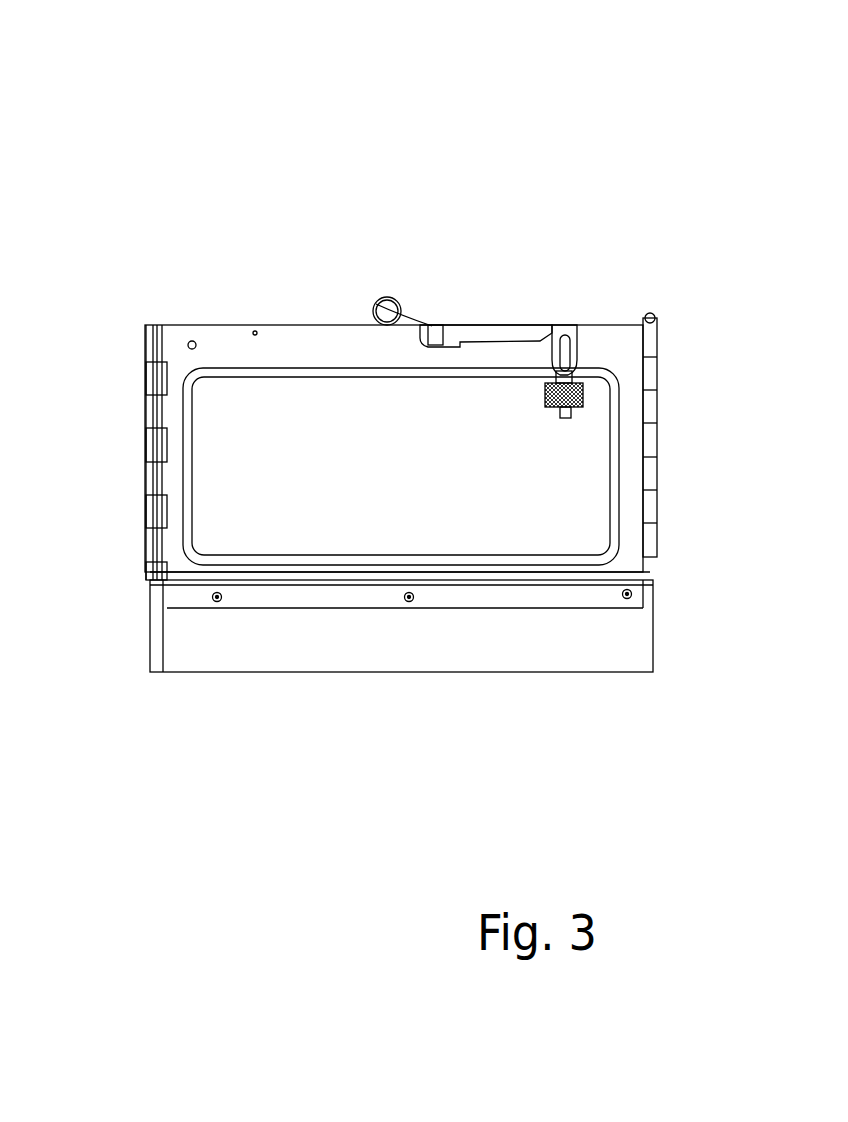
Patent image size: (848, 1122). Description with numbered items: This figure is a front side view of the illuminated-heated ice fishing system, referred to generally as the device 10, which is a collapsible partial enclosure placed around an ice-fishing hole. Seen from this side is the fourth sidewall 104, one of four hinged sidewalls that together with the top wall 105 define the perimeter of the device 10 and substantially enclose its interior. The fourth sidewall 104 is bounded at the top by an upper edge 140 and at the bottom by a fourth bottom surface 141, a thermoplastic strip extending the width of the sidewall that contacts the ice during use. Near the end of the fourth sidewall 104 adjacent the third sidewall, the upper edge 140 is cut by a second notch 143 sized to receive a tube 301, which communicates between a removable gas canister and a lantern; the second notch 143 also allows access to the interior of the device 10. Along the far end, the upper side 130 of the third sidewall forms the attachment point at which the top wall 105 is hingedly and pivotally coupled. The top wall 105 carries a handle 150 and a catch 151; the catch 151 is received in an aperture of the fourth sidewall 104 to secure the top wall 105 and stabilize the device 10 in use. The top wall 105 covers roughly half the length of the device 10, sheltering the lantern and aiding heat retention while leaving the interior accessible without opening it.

The device 10 is at (104, 82).
The fourth sidewall 104 is at (245, 502).
The top wall 105 is at (515, 322).
The upper side 130 is at (662, 320).
The upper edge 140 is at (313, 325).
The fourth bottom surface 141 is at (627, 650).
The second notch 143 is at (583, 322).
The handle 150 is at (400, 320).
The catch 151 is at (445, 322).
The tube 301 is at (572, 378).